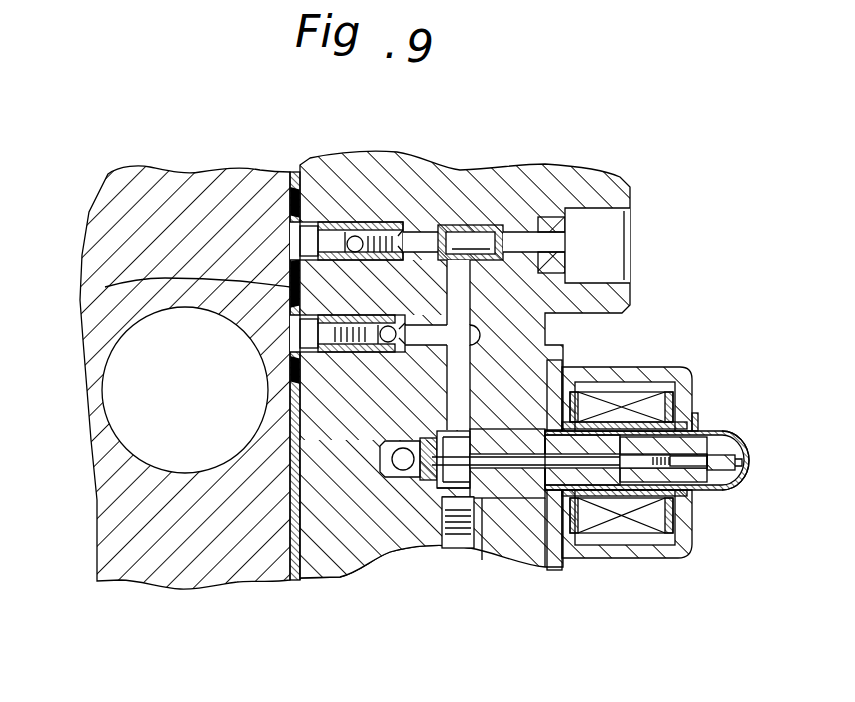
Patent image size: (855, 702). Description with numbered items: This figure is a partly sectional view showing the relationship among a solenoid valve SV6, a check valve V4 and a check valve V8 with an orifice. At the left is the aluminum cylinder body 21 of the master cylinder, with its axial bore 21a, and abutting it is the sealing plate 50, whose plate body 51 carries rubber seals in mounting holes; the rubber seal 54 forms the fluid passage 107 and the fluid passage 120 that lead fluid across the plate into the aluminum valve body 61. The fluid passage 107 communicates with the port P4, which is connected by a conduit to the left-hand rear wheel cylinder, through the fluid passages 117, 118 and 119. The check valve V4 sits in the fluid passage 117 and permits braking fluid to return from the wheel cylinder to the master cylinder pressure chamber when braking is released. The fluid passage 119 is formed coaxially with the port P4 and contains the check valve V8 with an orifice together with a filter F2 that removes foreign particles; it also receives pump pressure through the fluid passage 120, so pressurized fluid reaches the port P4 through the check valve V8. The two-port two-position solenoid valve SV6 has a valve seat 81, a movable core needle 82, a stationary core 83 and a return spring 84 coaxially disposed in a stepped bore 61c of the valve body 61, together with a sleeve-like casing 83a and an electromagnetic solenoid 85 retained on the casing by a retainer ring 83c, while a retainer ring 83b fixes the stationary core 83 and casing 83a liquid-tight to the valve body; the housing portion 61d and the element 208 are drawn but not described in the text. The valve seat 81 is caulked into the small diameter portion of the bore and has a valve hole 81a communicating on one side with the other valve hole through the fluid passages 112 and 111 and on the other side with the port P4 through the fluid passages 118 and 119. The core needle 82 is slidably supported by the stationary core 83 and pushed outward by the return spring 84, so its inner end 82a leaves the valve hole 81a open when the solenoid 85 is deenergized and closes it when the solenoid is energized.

The cylinder body 21 is at (250, 472).
The axial bore 21a is at (163, 462).
The rubber seal 54 is at (105, 287).
The valve body 61 is at (557, 182).
The sealing plate 50 is at (296, 172).
The plate body 51 is at (296, 580).
The fluid passage 120 is at (293, 238).
The fluid passage 107 is at (290, 347).
The check valve with an orifice V8 is at (358, 236).
The fluid passage 119 is at (425, 237).
The filter F2 is at (472, 250).
The port P4 is at (610, 245).
The fluid passage 118 is at (453, 363).
The fluid passage 117 is at (442, 333).
The check valve V4 is at (367, 352).
The fluid passage 111 is at (392, 465).
The fluid passage 112 is at (432, 474).
The valve seat 81 is at (450, 478).
The movable core needle 82 is at (518, 505).
The valve hole 81a is at (449, 505).
The inner end 82a is at (458, 540).
The spring 208 is at (465, 536).
The stepped bore 61c is at (505, 552).
The solenoid valve SV6 is at (670, 481).
The housing 61d is at (622, 369).
The electromagnetic solenoid 85 is at (637, 527).
The return spring 84 is at (610, 482).
The retainer ring 83c is at (698, 428).
The stationary core 83 is at (549, 545).
The sleeve-like casing 83a is at (712, 495).
The retainer ring 83b is at (547, 568).